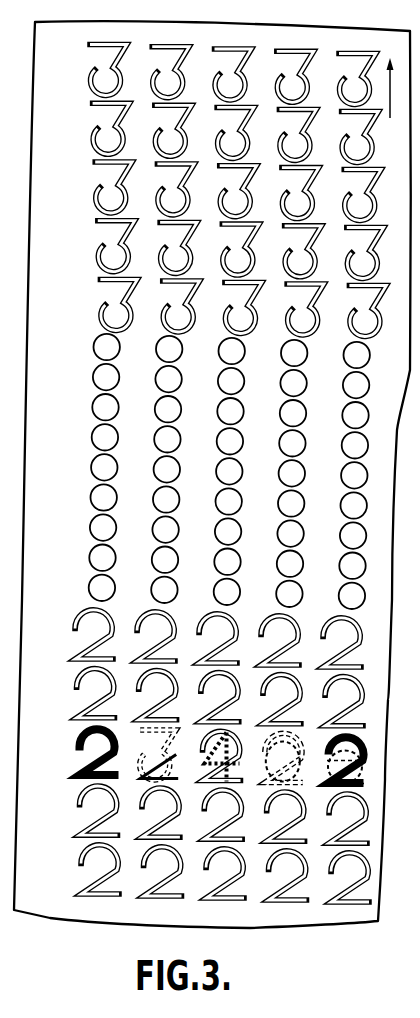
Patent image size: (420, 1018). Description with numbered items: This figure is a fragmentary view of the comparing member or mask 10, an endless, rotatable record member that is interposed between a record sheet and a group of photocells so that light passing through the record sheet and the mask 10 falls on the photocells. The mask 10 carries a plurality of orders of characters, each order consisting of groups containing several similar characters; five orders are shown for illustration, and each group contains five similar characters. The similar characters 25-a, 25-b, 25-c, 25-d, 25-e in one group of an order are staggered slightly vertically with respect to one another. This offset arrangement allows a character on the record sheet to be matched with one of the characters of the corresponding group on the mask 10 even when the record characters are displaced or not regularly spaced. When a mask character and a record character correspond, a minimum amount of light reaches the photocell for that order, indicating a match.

The comparing member or mask 10 is at (373, 822).
The similar character 25-a is at (194, 638).
The similar character 25-b is at (195, 697).
The similar character 25-c is at (195, 756).
The similar character 25-d is at (197, 814).
The similar character 25-e is at (198, 873).